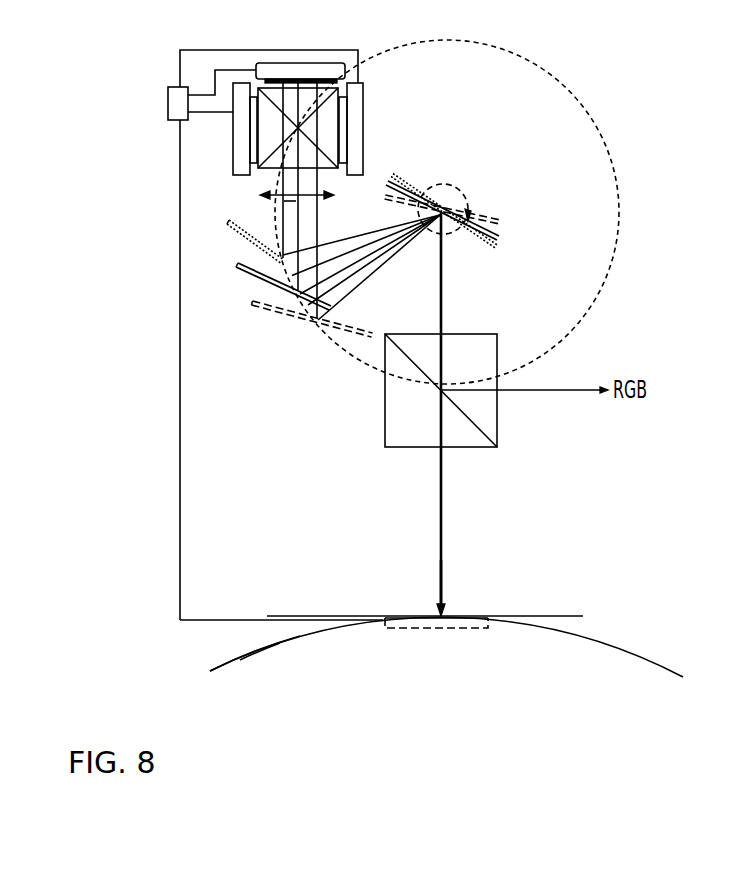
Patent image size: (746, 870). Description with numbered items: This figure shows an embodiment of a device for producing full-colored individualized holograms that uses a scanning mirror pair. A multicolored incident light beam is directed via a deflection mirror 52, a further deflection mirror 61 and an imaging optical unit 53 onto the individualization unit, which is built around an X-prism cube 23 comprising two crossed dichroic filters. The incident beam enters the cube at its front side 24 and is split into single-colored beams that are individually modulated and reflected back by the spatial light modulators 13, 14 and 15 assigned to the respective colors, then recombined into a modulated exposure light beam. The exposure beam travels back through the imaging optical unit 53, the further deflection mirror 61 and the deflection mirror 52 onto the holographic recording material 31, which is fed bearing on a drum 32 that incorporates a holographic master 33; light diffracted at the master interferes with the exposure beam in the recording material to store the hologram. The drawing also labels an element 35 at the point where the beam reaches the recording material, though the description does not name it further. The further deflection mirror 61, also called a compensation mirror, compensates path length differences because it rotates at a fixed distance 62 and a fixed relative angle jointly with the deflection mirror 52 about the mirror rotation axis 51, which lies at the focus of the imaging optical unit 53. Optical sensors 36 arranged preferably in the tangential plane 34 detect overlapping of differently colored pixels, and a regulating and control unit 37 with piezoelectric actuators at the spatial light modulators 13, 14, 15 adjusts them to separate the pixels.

The spatial light modulator 13 is at (238, 143).
The spatial light modulator 14 is at (358, 128).
The spatial light modulator 15 is at (320, 72).
The X-prism cube 23 is at (270, 90).
The front side 24 is at (233, 186).
The holographic recording material 31 is at (220, 659).
The drum 32 is at (618, 673).
The holographic master 33 is at (260, 662).
The tangential plane 34 is at (565, 615).
The projection beam 35 is at (443, 612).
The optical sensors 36 is at (410, 619).
The regulating and control unit 37 is at (175, 107).
The mirror rotation axis 51 is at (455, 197).
The deflection mirror 52 is at (500, 232).
The imaging optical unit 53 is at (290, 200).
The further deflection mirror 61 is at (235, 228).
The fixed distance 62 is at (401, 280).